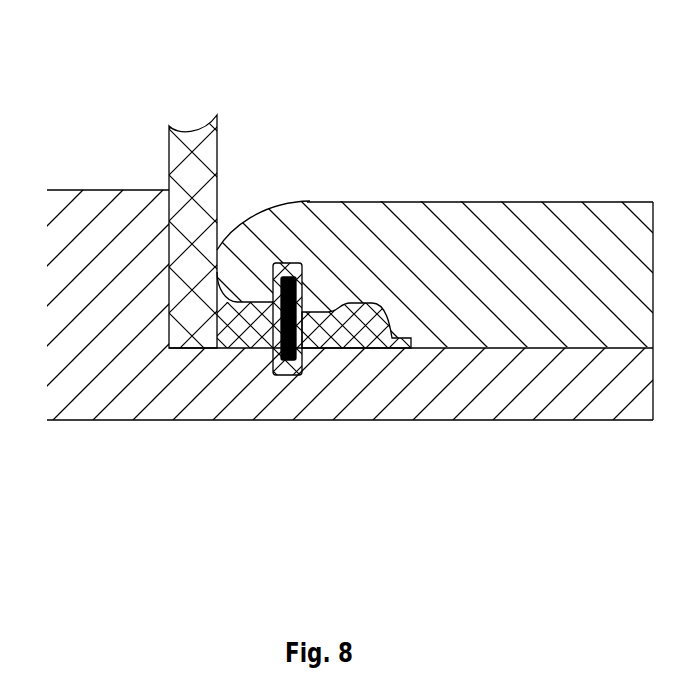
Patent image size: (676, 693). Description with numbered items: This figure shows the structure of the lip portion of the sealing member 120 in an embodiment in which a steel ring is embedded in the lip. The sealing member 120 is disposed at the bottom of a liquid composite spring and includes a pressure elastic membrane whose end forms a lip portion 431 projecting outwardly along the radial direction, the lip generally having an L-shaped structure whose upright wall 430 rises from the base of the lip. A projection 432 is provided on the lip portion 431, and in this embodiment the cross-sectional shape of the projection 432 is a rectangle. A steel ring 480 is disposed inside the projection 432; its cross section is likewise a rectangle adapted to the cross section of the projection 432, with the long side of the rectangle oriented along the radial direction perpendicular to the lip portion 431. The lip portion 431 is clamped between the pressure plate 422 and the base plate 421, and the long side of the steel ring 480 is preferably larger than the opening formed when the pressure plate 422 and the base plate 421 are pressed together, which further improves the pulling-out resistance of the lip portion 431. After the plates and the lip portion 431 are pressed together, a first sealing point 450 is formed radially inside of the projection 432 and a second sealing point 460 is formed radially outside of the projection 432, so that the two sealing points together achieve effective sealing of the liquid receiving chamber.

The sealing member 120 is at (51, 44).
The base plate 421 is at (478, 382).
The pressure plate 422 is at (495, 307).
The wall 430 is at (200, 227).
The lip portion 431 is at (232, 330).
The projection 432 is at (291, 360).
The first sealing point 450 is at (243, 288).
The second sealing point 460 is at (314, 307).
The steel ring 480 is at (286, 360).